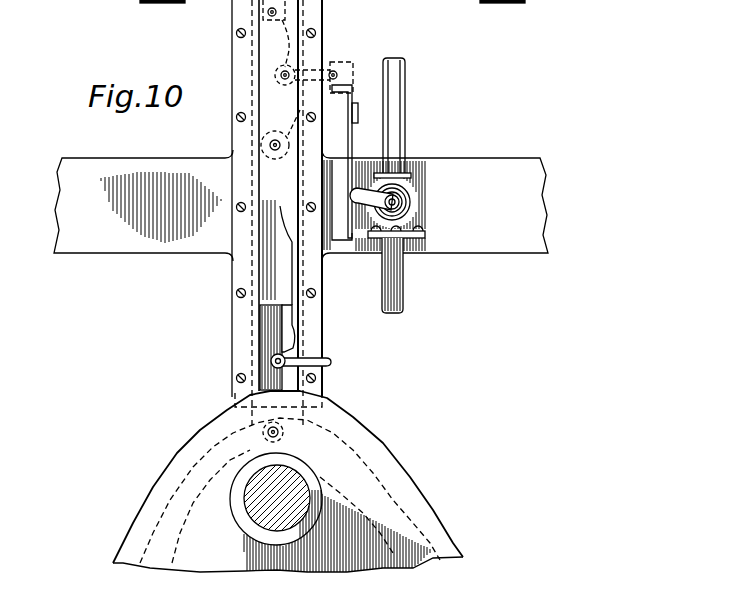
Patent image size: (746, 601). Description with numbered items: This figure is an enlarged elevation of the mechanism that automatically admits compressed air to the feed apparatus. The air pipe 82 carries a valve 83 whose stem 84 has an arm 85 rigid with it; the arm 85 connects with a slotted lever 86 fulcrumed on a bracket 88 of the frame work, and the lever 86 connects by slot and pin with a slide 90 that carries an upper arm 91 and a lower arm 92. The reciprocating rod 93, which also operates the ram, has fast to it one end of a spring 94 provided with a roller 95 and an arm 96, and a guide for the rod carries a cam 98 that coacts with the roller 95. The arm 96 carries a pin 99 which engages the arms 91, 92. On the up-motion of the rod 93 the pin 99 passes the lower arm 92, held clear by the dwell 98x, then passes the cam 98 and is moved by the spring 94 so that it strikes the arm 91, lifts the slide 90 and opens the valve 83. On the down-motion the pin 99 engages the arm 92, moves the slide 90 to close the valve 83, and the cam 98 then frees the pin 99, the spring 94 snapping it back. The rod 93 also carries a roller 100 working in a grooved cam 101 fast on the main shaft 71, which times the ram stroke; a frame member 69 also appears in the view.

The frame member 69 is at (500, 3).
The main shaft 71 is at (248, 492).
The pipe 82 is at (406, 110).
The valve 83 is at (402, 212).
The valve stem 84 is at (397, 192).
The arm 85 is at (386, 179).
The slotted lever 86 is at (387, 269).
The bracket 88 is at (301, 205).
The slide 90 is at (356, 140).
The arm 91 is at (352, 88).
The arm 92 is at (341, 245).
The reciprocating rod 93 is at (280, 3).
The spring 94 is at (293, 330).
The roller 95 is at (270, 358).
The arm 96 is at (322, 362).
The cam 98 is at (280, 245).
The dwell 98x is at (297, 308).
The pin 99 is at (322, 366).
The roller 100 is at (285, 440).
The grooved cam 101 is at (412, 473).